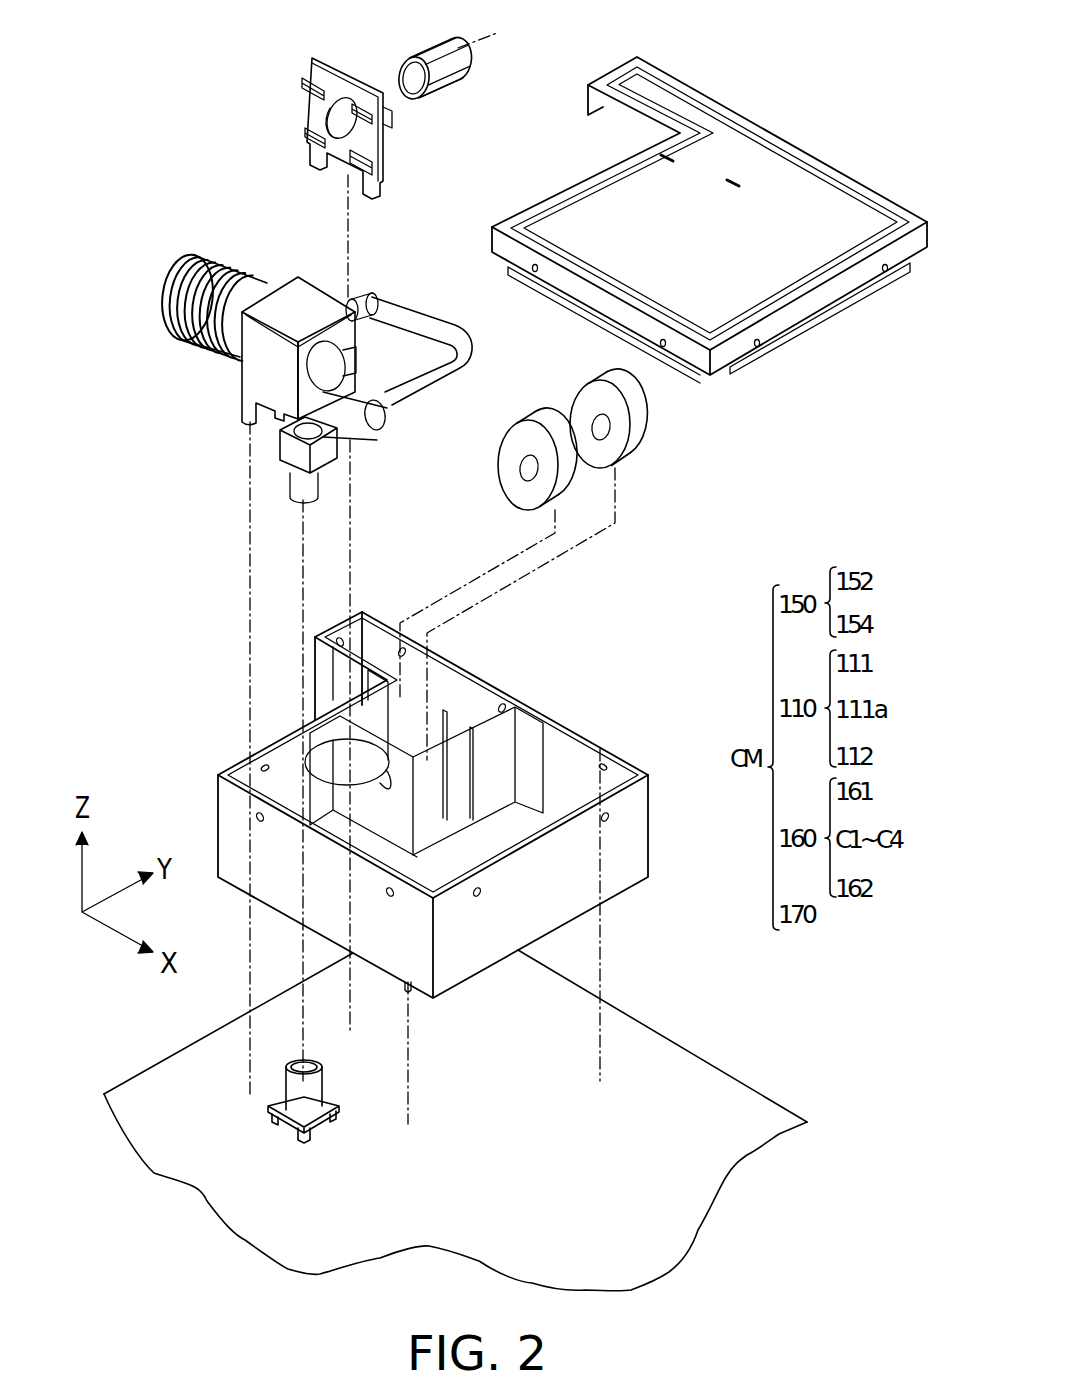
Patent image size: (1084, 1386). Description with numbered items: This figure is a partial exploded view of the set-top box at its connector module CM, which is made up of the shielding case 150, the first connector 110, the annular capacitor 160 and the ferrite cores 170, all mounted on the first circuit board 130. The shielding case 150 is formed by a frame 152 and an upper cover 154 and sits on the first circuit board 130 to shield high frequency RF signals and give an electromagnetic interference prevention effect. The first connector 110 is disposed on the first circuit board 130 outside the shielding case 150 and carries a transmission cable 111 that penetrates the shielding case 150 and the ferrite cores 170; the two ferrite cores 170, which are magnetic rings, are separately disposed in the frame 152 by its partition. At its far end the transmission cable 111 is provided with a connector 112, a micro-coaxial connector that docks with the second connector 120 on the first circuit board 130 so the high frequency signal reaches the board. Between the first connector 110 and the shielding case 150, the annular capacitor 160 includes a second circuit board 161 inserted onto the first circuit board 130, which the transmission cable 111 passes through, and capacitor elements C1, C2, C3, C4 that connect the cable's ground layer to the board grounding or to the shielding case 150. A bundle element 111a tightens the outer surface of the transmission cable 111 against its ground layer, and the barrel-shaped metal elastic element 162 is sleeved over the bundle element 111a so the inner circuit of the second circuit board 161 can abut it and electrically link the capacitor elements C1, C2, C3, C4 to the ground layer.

The connector module CM is at (513, 562).
The first connector 110 is at (172, 335).
The transmission cable 111 is at (440, 340).
The bundle element 111a is at (368, 298).
The connector 112 is at (285, 456).
The second connector 120 is at (323, 1087).
The first circuit board 130 is at (696, 1088).
The shielding case 150 is at (572, 527).
The frame 152 is at (651, 826).
The upper cover 154 is at (847, 183).
The annular capacitor 160 is at (356, 99).
The second circuit board 161 is at (318, 57).
The metal elastic element 162 is at (420, 47).
The ferrite core 170 is at (598, 385).
The capacitor element C1 is at (302, 78).
The capacitor element C2 is at (366, 100).
The capacitor element C3 is at (310, 132).
The capacitor element C4 is at (367, 157).